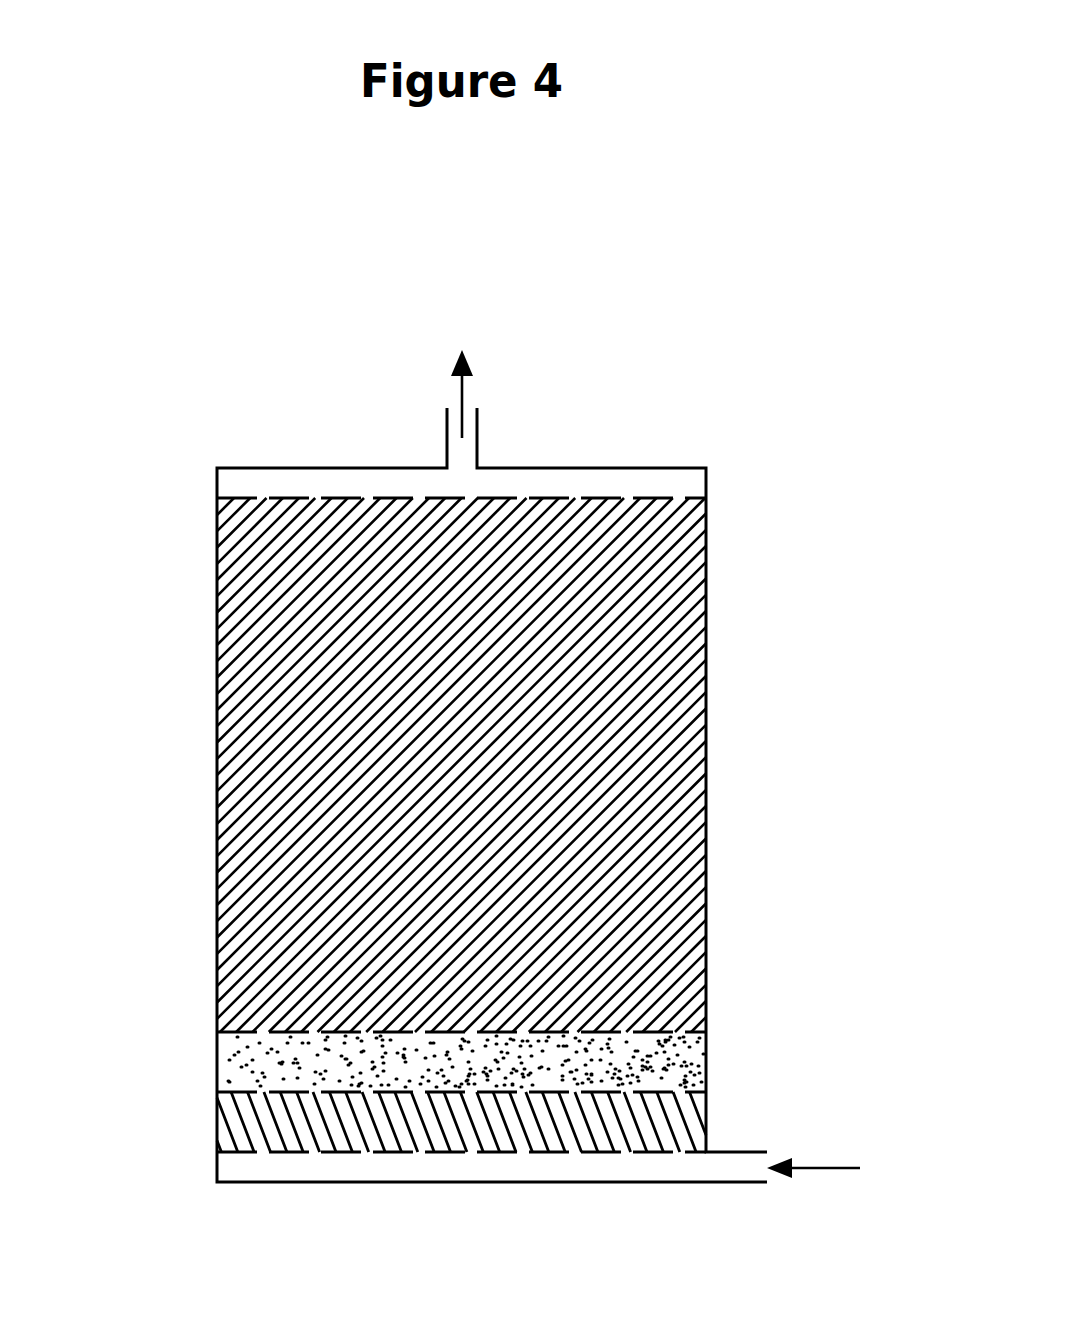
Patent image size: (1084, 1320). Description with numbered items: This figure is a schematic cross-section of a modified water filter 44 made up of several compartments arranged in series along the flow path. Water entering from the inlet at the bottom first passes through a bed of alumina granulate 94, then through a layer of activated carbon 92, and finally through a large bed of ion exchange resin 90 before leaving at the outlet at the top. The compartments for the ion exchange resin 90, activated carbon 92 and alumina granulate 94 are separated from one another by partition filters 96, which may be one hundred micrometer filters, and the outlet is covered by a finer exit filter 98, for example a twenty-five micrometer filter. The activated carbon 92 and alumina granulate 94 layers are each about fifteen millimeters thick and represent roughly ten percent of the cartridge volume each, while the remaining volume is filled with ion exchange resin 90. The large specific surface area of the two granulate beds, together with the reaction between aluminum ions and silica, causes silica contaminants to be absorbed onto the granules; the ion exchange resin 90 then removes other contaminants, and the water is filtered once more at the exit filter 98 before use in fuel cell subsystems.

The modified filter 44 is at (217, 350).
The ion exchange resin 90 is at (706, 720).
The activated carbon 92 is at (706, 1062).
The alumina granulate 94 is at (706, 1122).
The partition filters 96 is at (217, 1152).
The exit filter 98 is at (217, 498).